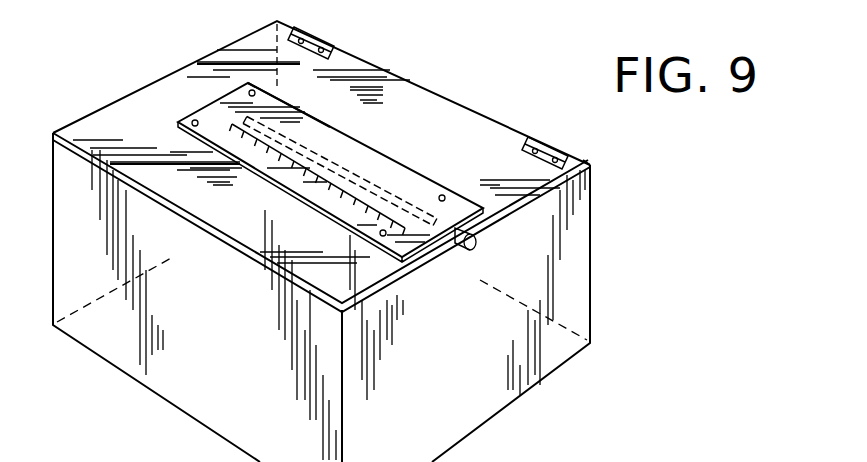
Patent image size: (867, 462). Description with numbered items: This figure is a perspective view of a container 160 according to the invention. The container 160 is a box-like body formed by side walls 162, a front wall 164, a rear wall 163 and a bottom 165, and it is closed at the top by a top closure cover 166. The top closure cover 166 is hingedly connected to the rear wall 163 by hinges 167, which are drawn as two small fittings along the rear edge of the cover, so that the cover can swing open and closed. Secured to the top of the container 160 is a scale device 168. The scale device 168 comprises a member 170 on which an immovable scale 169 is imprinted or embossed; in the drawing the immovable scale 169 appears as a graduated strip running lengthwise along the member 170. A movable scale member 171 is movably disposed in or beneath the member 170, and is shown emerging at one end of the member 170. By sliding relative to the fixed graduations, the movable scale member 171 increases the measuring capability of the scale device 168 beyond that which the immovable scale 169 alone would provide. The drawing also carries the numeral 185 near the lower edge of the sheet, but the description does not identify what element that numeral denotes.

The container 160 is at (598, 250).
The side walls 162 is at (127, 117).
The rear wall 163 is at (453, 123).
The front wall 164 is at (83, 283).
The bottom 165 is at (503, 392).
The top closure cover 166 is at (583, 161).
The hinges 167 is at (332, 46).
The scale device 168 is at (397, 158).
The immovable scale 169 is at (258, 138).
The member 170 is at (318, 120).
The movable scale member 171 is at (457, 247).
The reference numeral 185 is at (654, 454).